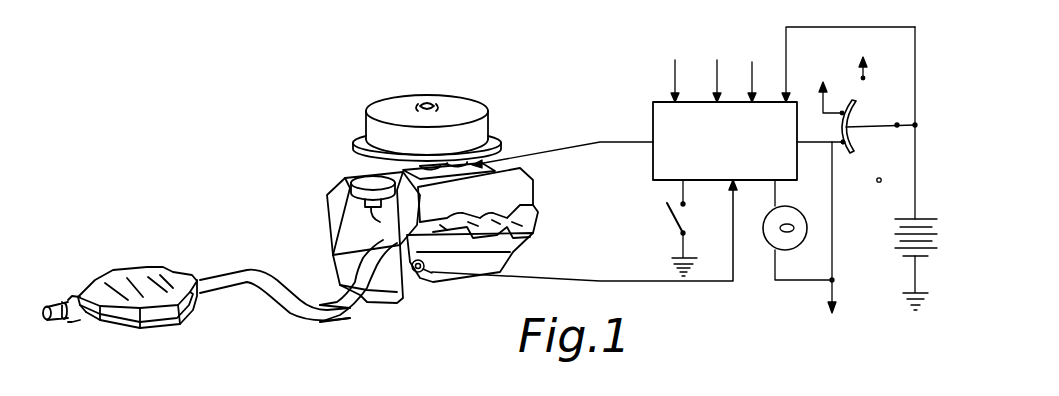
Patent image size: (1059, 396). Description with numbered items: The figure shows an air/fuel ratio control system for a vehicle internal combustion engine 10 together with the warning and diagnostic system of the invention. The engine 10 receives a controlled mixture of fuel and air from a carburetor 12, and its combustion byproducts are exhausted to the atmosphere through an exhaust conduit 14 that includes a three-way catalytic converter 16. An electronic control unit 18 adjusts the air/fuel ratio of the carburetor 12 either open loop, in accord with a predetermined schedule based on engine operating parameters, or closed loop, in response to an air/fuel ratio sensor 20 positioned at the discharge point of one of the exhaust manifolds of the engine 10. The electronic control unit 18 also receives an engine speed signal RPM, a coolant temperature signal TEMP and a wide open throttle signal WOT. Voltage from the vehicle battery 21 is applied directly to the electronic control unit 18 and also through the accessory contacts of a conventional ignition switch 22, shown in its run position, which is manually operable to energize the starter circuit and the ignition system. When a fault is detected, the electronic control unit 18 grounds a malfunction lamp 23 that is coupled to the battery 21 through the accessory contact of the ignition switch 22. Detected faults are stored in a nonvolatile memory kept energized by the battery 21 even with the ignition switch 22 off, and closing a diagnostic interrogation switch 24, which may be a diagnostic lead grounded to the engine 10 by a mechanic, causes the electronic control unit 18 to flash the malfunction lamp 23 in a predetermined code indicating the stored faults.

The internal combustion engine 10 is at (552, 206).
The carburetor 12 is at (410, 168).
The exhaust conduit 14 is at (245, 272).
The three-way catalytic converter 16 is at (127, 274).
The electronic control unit 18 is at (662, 157).
The air/fuel ratio sensor 20 is at (418, 273).
The vehicle battery 21 is at (907, 260).
The ignition switch 22 is at (884, 100).
The malfunction lamp 23 is at (765, 243).
The diagnostic interrogation switch 24 is at (672, 218).